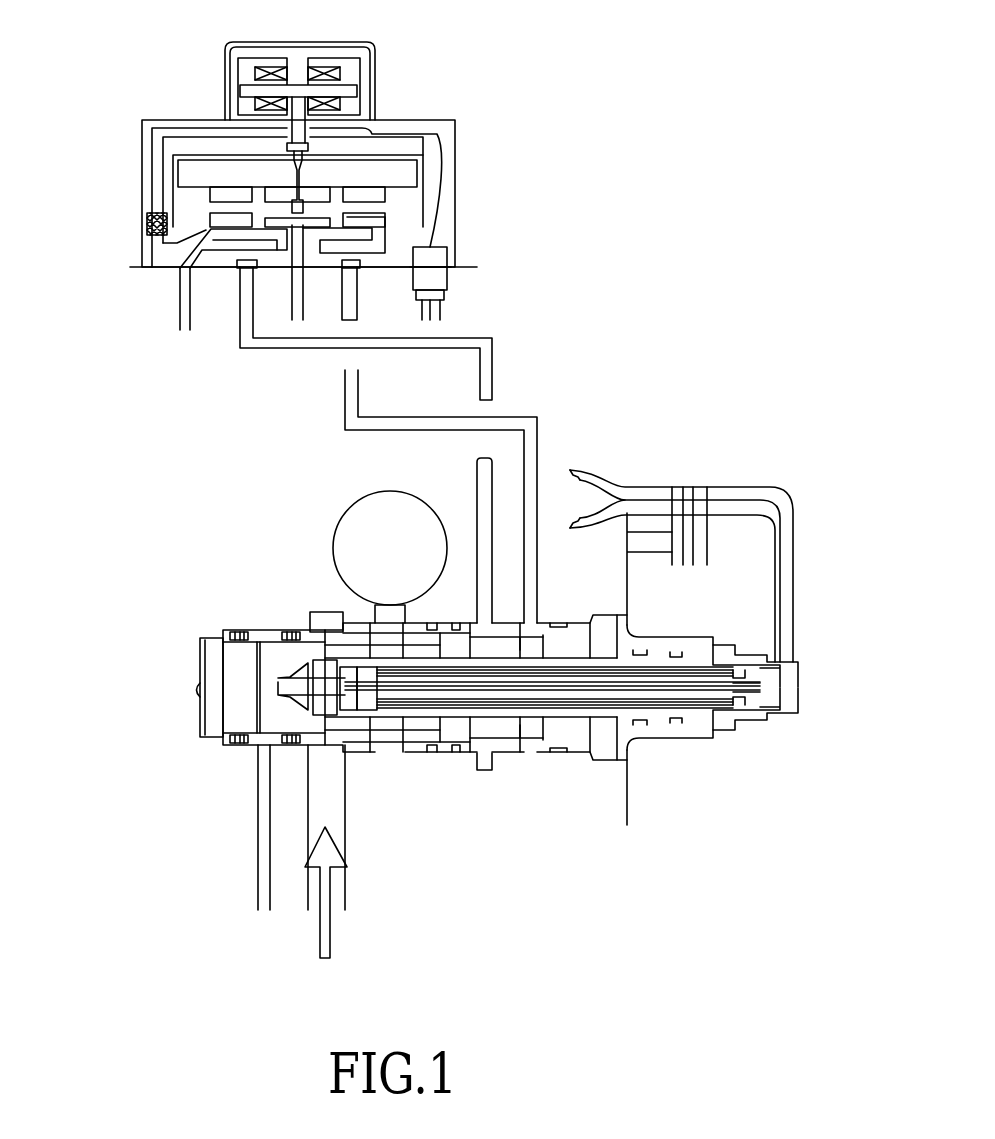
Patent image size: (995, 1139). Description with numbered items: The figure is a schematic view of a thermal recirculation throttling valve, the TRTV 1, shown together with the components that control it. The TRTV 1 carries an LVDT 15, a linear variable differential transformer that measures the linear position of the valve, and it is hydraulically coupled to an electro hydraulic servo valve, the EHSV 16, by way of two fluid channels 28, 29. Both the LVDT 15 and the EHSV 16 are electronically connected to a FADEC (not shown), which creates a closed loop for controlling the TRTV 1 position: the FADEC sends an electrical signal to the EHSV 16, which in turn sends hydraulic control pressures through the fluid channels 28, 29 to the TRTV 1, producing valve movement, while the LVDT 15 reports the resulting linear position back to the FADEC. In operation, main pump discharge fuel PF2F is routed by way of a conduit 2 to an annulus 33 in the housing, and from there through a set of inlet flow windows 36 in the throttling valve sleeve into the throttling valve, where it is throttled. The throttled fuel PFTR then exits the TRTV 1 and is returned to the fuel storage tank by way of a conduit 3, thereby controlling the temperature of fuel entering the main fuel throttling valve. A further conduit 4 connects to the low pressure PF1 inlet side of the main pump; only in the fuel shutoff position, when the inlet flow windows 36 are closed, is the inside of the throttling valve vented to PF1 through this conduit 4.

The thermal recirculation throttling valve (TRTV) 1 is at (200, 668).
The conduit 2 is at (337, 887).
The conduit 3 is at (345, 512).
The conduit 4 is at (262, 867).
The LVDT (Linear Variable Differential Transformer) 15 is at (800, 690).
The EHSV (Electro Hydraulic Servo Valve) 16 is at (456, 187).
The fluid channel 28 is at (537, 442).
The fluid channel 29 is at (490, 375).
The annulus 33 is at (335, 612).
The inlet flow windows 36 is at (328, 637).